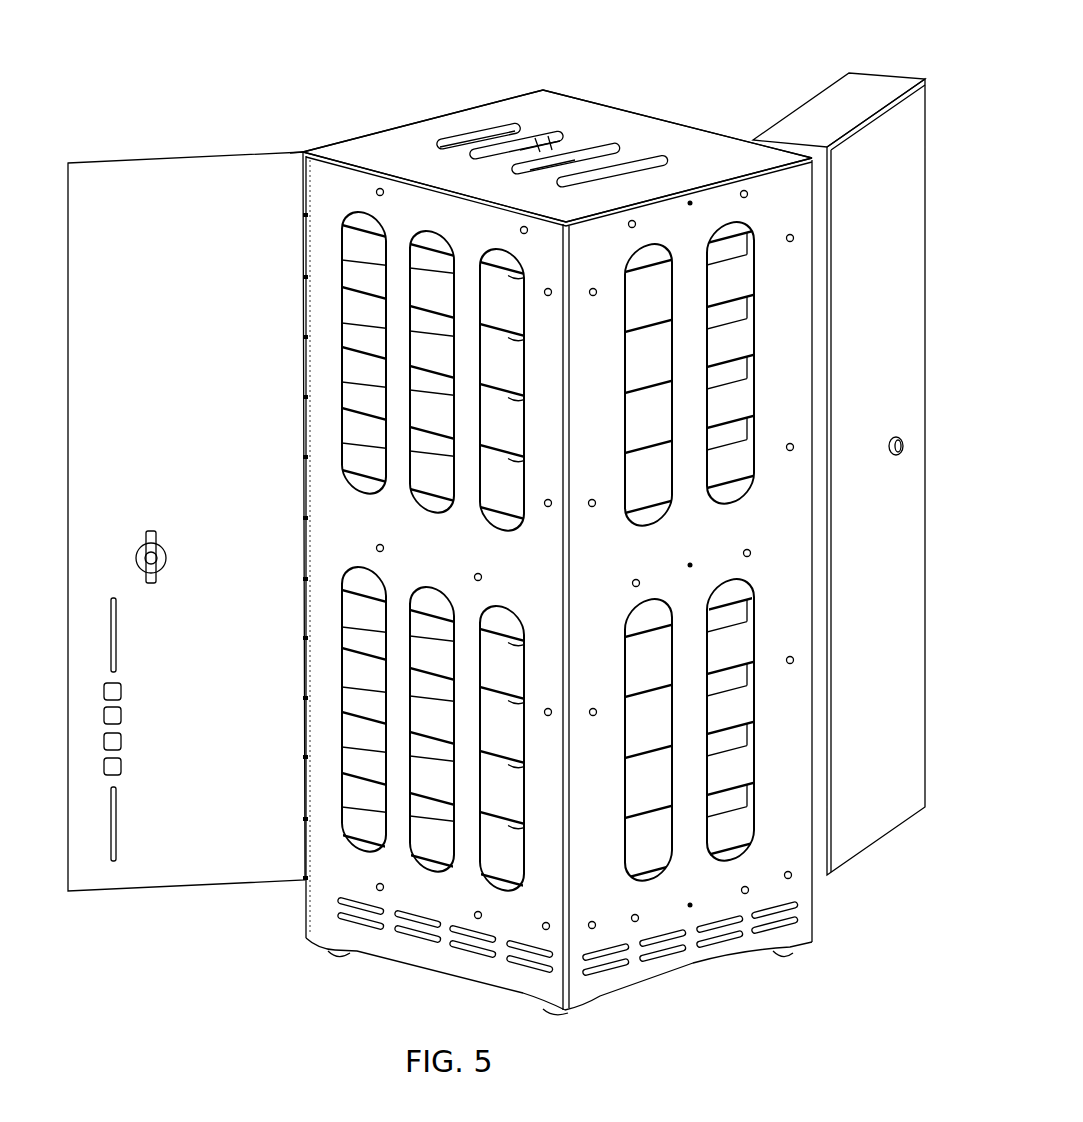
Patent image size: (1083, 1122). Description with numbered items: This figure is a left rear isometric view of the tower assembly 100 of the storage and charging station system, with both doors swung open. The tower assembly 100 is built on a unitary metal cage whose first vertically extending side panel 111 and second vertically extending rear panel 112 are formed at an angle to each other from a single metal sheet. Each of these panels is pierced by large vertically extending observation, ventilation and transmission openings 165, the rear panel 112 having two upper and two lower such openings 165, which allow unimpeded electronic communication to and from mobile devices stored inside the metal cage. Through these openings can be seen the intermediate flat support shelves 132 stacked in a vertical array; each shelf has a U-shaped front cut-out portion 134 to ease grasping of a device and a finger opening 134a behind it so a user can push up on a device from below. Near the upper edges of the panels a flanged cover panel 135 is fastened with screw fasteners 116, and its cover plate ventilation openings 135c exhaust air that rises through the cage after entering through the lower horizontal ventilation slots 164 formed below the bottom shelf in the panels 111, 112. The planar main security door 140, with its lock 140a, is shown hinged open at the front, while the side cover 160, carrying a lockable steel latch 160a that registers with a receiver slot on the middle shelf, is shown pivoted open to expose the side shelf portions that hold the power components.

The tower assembly 100 is at (586, 50).
The first vertically extending side panel 111 is at (430, 962).
The second vertically extending rear panel 112 is at (693, 962).
The screw fasteners 116 is at (522, 228).
The intermediate flat support shelves 132 is at (344, 405).
The U-shaped front cut-out portion 134 is at (437, 812).
The finger opening 134a is at (517, 820).
The flanged cover panel 135 is at (415, 122).
The cover plate ventilation openings 135c is at (655, 158).
The main security door 140 is at (160, 887).
The first door lock 140a is at (154, 529).
The side cover 160 is at (926, 193).
The lockable steel latch 160a is at (896, 457).
The lower horizontal ventilation slots 164 is at (462, 930).
The observation, ventilation and transmission (OVT) openings 165 is at (488, 608).